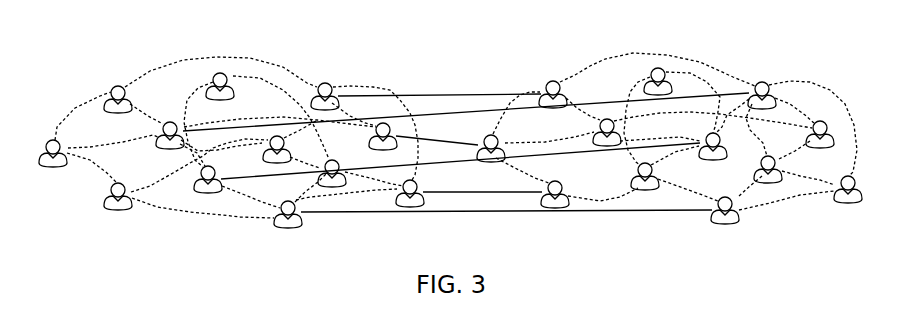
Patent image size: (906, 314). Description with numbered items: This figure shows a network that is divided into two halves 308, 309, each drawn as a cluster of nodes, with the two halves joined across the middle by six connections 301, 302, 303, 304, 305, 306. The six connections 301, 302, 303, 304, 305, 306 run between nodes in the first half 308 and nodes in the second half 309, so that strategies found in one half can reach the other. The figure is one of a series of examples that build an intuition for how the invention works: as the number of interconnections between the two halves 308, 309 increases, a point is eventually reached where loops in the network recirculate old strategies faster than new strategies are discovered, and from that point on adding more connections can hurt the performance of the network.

The connection 301 is at (412, 93).
The connection 302 is at (437, 114).
The connection 303 is at (457, 142).
The connection 304 is at (463, 163).
The connection 305 is at (527, 193).
The connection 306 is at (600, 213).
The network half 308 is at (251, 56).
The network half 309 is at (679, 54).